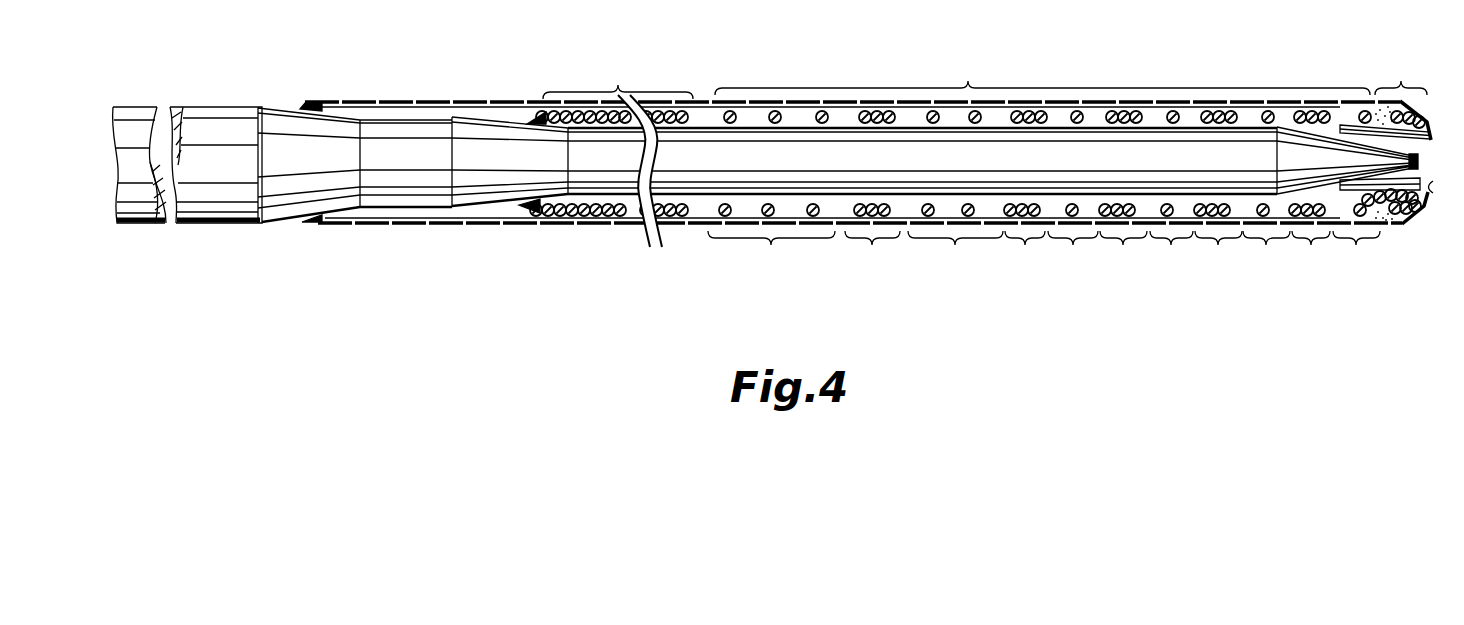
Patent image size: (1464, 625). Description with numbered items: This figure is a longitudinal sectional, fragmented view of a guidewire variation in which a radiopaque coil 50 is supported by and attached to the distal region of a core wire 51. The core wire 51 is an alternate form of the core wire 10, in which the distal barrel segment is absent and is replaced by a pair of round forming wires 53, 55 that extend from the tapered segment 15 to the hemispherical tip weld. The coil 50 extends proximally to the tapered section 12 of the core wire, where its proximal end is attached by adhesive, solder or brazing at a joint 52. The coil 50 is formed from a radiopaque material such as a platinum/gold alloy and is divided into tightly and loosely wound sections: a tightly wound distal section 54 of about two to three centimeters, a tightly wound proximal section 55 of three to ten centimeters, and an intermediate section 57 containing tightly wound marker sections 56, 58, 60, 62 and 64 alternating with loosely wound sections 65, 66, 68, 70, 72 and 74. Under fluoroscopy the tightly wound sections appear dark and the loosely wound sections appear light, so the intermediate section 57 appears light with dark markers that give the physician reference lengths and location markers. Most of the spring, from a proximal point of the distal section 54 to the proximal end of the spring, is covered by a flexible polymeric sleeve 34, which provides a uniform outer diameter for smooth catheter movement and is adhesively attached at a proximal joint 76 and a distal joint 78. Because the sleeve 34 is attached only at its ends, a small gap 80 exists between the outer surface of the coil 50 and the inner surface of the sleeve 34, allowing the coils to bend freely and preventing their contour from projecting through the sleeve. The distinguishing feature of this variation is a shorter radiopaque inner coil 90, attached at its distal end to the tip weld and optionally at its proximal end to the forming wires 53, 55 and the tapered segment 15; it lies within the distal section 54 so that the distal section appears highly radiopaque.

The core wire 10 is at (203, 117).
The tapered section 12 is at (282, 127).
The tapered segment 15 is at (1308, 152).
The flexible polymeric sleeve 34 is at (412, 102).
The radiopaque coil 50 is at (583, 225).
The core wire 51 is at (133, 115).
The joint 52 is at (528, 212).
The round forming wire 53 is at (1412, 214).
The distal section 54 is at (1401, 89).
The proximal section 55 is at (1440, 222).
The tightly wound coil section 56 is at (1309, 241).
The intermediate section 57 is at (1043, 88).
The tightly wound coil section 58 is at (1218, 241).
The tightly wound coil section 60 is at (1123, 241).
The tightly wound coil section 62 is at (1024, 241).
The tightly wound coil section 64 is at (872, 241).
The loosely wound coil section 65 is at (1356, 241).
The loosely wound coil section 66 is at (1266, 241).
The loosely wound coil section 68 is at (1171, 241).
The loosely wound coil section 70 is at (1073, 241).
The loosely wound coil section 72 is at (955, 241).
The loosely wound coil section 74 is at (771, 241).
The proximal joint 76 is at (303, 108).
The distal joint 78 is at (1403, 224).
The gap 80 is at (670, 102).
The inner coil 90 is at (1447, 188).